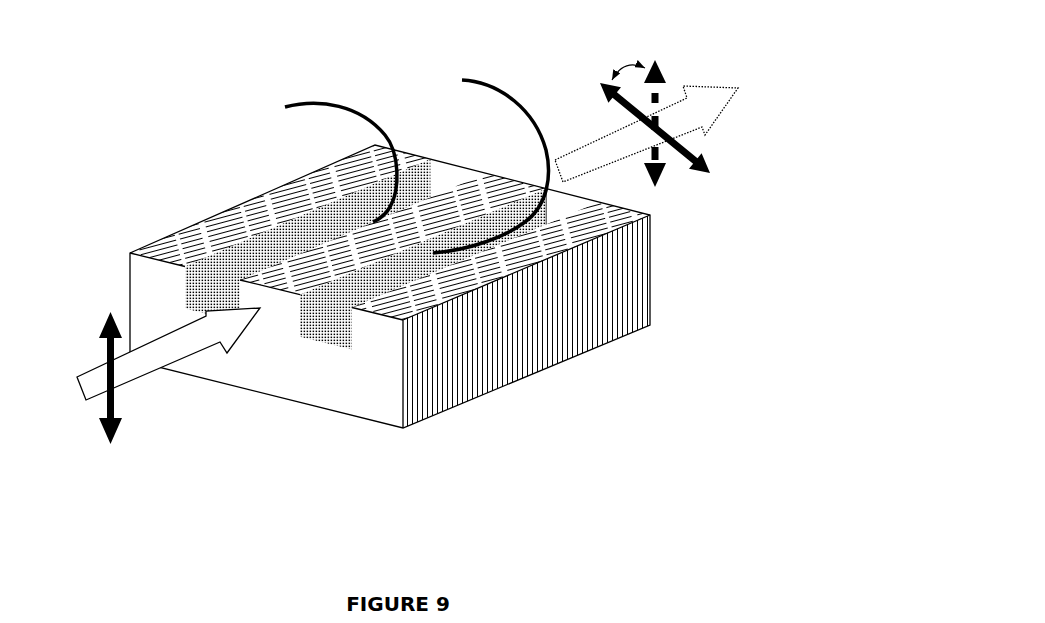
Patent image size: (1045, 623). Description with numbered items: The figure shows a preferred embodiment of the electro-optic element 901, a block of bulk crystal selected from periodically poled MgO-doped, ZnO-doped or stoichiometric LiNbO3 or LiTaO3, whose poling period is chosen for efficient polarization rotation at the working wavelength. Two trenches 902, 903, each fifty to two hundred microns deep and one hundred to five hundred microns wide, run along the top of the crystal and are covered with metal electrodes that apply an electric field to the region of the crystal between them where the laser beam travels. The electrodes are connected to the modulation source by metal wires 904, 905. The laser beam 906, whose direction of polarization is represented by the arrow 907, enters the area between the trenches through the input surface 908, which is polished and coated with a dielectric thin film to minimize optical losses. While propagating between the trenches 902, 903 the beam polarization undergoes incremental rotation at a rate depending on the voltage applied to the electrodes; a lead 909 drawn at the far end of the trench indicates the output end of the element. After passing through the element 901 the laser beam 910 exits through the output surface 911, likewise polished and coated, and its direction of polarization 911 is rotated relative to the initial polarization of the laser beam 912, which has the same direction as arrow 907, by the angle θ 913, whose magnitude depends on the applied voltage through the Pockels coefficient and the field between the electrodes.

The electro-optic element 901 is at (475, 397).
The first trench 902 is at (220, 263).
The second trench 903 is at (327, 312).
The first metal wire 904 is at (332, 101).
The second metal wire 905 is at (474, 76).
The laser beam 906 is at (158, 360).
The direction of polarization arrow 907 is at (92, 317).
The input surface 908 is at (268, 318).
The channel output end 909 is at (549, 207).
The exiting laser beam 910 is at (724, 118).
The output surface / rotated direction of polarization 911 is at (596, 84).
The initial polarization of the laser beam 912 is at (671, 67).
The polarization rotation angle θ 913 is at (630, 42).